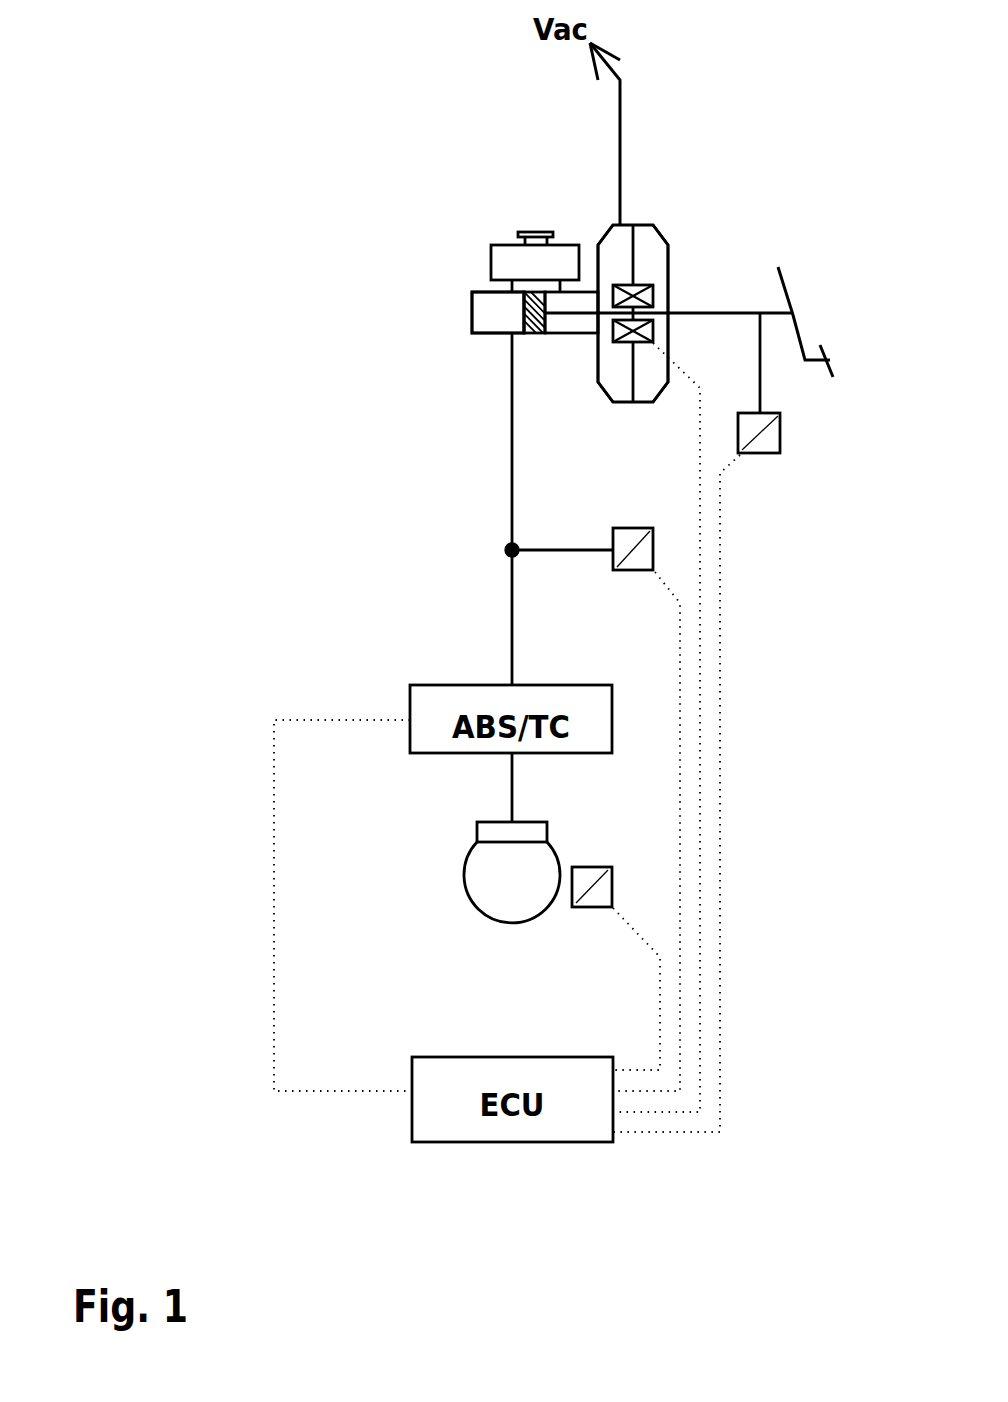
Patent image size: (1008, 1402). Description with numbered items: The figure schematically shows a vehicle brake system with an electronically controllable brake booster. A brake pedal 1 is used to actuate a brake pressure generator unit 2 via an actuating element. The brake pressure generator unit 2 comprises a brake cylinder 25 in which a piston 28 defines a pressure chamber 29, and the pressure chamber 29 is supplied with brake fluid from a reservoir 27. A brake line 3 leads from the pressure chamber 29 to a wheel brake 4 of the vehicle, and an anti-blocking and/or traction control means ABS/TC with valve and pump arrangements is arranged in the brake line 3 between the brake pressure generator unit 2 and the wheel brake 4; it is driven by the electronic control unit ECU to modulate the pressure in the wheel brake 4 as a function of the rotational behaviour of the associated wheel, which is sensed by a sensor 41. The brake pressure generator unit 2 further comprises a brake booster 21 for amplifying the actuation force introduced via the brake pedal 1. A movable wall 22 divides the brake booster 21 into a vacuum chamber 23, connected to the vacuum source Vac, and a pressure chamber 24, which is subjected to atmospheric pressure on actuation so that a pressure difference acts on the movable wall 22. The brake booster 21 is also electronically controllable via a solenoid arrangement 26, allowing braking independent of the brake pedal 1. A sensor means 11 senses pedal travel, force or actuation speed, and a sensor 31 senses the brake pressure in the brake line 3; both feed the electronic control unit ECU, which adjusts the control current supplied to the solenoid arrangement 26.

The brake pedal 1 is at (828, 358).
The brake pressure generator unit 2 is at (432, 76).
The brake line 3 is at (512, 423).
The wheel brake 4 is at (540, 827).
The sensor means 11 is at (780, 453).
The brake booster 21 is at (647, 284).
The movable wall 22 is at (637, 235).
The vacuum chamber 23 is at (620, 382).
The pressure chamber 24 is at (647, 383).
The brake cylinder 25 is at (472, 320).
The solenoid arrangement 26 is at (660, 234).
The reservoir 27 is at (512, 260).
The piston 28 is at (527, 303).
The pressure chamber 29 is at (490, 307).
The sensor 31 is at (615, 528).
The sensor 41 is at (590, 867).